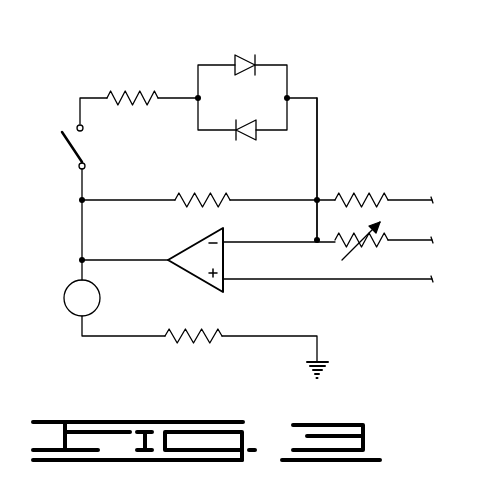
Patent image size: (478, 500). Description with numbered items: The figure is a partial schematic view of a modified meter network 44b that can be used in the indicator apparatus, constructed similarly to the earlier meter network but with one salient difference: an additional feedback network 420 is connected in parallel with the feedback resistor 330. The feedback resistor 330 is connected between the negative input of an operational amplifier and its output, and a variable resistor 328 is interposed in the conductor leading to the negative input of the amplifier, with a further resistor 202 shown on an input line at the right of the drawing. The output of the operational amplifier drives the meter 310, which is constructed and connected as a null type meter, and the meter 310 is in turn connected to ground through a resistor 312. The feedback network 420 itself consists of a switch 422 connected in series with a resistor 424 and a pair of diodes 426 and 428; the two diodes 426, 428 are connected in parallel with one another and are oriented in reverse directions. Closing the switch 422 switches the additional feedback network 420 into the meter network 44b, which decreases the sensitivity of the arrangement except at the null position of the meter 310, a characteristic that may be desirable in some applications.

The feedback network 420 is at (62, 122).
The switch 422 is at (68, 152).
The resistor 424 is at (123, 93).
The diode 426 is at (238, 57).
The diode 428 is at (250, 137).
The modified meter network 44b is at (347, 125).
The feedback resistor 330 is at (193, 205).
The resistor 202 is at (367, 195).
The variable resistor 328 is at (367, 250).
The meter 310 is at (100, 295).
The resistor 312 is at (182, 342).